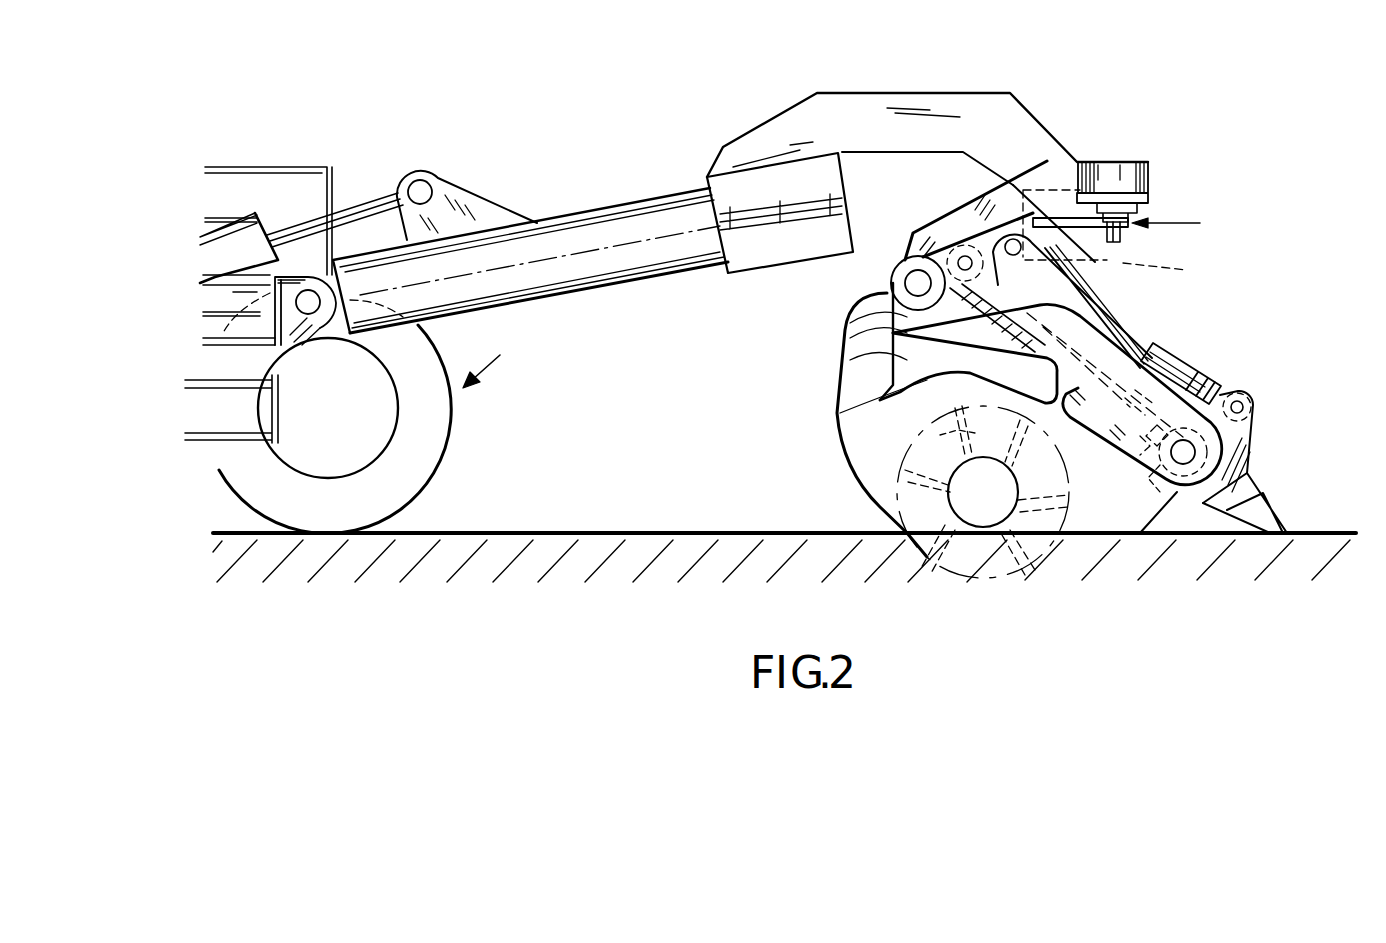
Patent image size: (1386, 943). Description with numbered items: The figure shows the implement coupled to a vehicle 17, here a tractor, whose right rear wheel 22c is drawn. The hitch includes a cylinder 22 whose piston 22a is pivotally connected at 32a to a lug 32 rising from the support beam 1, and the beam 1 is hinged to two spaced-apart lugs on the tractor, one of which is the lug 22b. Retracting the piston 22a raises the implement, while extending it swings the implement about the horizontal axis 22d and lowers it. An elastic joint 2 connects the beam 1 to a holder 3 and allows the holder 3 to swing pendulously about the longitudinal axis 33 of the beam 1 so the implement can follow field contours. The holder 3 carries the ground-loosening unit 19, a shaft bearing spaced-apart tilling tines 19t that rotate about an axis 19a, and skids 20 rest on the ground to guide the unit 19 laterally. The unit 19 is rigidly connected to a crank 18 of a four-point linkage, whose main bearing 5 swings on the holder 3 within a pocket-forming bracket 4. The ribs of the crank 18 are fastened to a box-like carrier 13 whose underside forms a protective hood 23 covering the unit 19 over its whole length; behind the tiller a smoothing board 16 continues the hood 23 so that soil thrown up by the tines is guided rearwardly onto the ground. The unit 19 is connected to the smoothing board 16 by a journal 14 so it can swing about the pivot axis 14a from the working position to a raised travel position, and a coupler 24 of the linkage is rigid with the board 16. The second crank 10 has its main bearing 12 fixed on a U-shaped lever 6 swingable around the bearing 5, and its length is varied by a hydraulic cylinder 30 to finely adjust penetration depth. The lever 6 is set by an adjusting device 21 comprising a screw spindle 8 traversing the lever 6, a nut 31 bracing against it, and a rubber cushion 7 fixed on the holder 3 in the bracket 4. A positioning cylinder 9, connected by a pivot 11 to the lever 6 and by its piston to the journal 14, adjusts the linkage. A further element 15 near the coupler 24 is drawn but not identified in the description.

The support beam 1 is at (632, 208).
The elastic joint 2 is at (760, 260).
The holder 3 is at (955, 188).
The bracket 4 is at (925, 245).
The main bearing 5 is at (918, 283).
The lever 6 is at (1063, 237).
The rubber cushion 7 is at (1125, 178).
The screw spindle 8 is at (1110, 213).
The positioning cylinder 9 is at (1095, 310).
The crank 10 is at (1150, 353).
The pivot 11 is at (1013, 239).
The main bearing 12 is at (963, 256).
The carrier 13 is at (850, 360).
The journal 14 is at (1185, 470).
The pivot axis 14a is at (1148, 470).
The pivot 15 is at (1242, 403).
The smoothing board 16 is at (1240, 480).
The vehicle 17 is at (492, 357).
The crank 18 is at (850, 338).
The ground-loosening unit 19 is at (895, 500).
The axis 19a is at (983, 492).
The tilling tines 19t is at (940, 435).
The skids 20 is at (840, 455).
The adjusting device 21 is at (1186, 222).
The cylinder 22 is at (236, 247).
The piston 22a is at (337, 220).
The lug 22b is at (290, 327).
The wheel 22c is at (440, 465).
The horizontal axis 22d is at (308, 310).
The protective hood 23 is at (840, 413).
The coupler 24 is at (1220, 433).
The hydraulic cylinder 30 is at (1200, 373).
The nut 31 is at (1122, 232).
The lug 32 is at (470, 217).
The pivot connection 32a is at (420, 190).
The longitudinal axis 33 is at (598, 250).